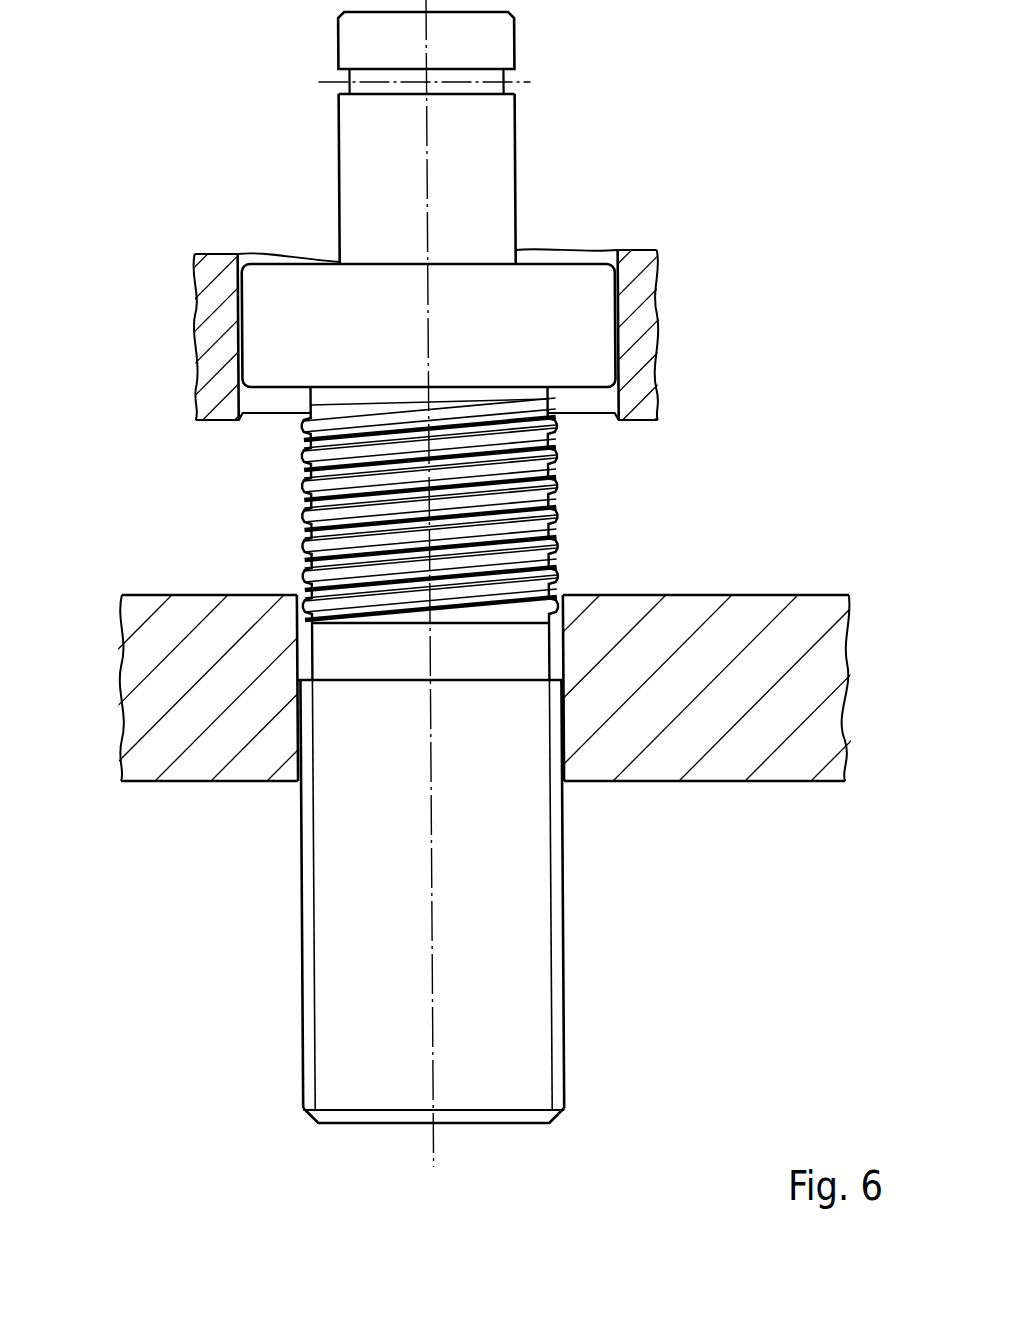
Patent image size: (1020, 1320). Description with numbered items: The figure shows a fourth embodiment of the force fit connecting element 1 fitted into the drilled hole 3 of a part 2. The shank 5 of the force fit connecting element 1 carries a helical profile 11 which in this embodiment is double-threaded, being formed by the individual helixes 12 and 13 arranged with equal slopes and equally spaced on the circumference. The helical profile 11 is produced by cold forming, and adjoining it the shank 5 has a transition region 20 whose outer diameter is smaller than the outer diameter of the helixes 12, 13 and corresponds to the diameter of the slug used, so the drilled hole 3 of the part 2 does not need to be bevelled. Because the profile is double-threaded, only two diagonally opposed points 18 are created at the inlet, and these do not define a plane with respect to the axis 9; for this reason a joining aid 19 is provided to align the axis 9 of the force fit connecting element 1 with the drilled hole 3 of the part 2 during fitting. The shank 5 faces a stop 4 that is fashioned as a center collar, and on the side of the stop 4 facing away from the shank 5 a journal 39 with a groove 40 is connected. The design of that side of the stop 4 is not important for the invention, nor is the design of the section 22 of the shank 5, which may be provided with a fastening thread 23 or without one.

The force fit connecting element 1 is at (640, 131).
The part 2 is at (679, 612).
The drilled hole 3 is at (558, 632).
The stop 4 is at (570, 338).
The shank 5 is at (391, 901).
The axis 9 is at (426, 869).
The helical profile 11 is at (559, 528).
The helix 12 is at (298, 453).
The helix 13 is at (302, 487).
The diagonally opposed points 18 is at (336, 628).
The joining aid 19 is at (635, 285).
The transition region 20 is at (369, 658).
The section 22 is at (344, 840).
The fastening thread 23 is at (302, 920).
The journal 39 is at (474, 157).
The groove 40 is at (483, 77).